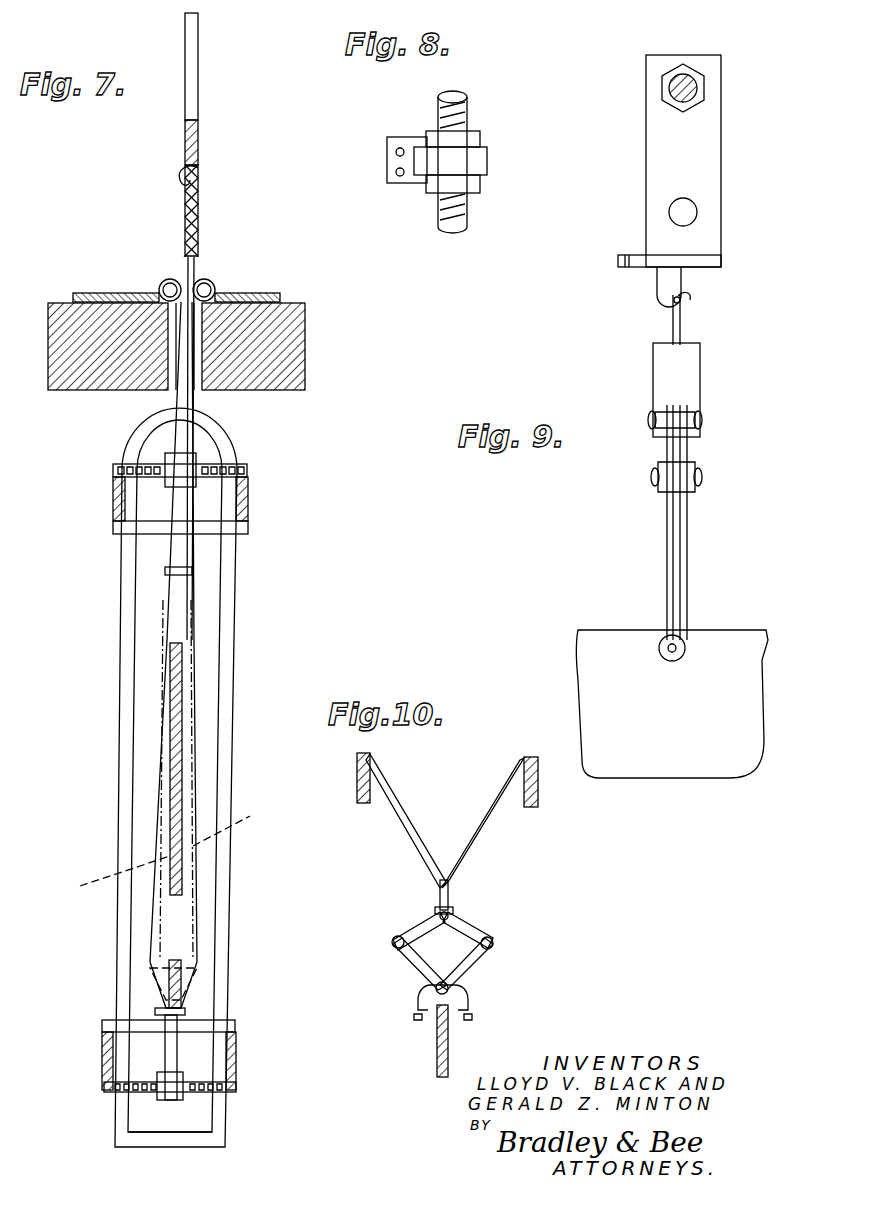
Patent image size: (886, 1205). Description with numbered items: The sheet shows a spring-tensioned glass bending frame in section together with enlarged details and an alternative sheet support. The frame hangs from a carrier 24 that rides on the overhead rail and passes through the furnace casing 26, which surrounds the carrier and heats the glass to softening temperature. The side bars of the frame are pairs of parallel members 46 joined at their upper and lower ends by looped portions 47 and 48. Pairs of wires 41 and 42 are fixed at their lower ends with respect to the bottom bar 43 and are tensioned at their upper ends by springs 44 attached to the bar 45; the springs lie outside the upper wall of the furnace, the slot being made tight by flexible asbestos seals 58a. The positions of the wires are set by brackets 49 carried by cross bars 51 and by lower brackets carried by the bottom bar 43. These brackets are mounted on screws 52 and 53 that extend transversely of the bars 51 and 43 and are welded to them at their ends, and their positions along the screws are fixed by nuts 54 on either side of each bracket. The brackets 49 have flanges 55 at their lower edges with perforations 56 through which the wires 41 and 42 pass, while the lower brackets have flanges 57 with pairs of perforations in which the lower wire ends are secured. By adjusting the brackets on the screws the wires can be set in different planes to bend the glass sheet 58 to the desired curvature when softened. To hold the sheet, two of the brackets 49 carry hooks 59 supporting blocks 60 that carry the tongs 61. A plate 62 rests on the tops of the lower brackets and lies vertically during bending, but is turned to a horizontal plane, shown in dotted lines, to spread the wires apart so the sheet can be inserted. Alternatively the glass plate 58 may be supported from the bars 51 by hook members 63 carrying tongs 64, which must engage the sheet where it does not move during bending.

In FIG. 7, the carrier 24 is at (202, 106).
In FIG. 7, the casing 26 is at (290, 342).
In FIG. 7, the wires 41 is at (185, 815).
In FIG. 7, the wires 42 is at (147, 856).
In FIG. 7, the bottom bar 43 is at (238, 1058).
In FIG. 7, the springs 44 is at (199, 210).
In FIG. 7, the bar 45 is at (199, 150).
In FIG. 7, the parallel members 46 is at (126, 737).
In FIG. 7, the looped portion 47 is at (222, 437).
In FIG. 7, the looped portion 48 is at (178, 1142).
In FIG. 7, the brackets 49 is at (186, 530).
In FIG. 8, the brackets 49 is at (450, 161).
In FIG. 9, the brackets 49 is at (700, 175).
In FIG. 7, the cross bars 51 is at (300, 531).
In FIG. 10, the cross bars 51 is at (362, 805).
In FIG. 7, the screws 52 is at (248, 471).
In FIG. 8, the screws 52 is at (468, 98).
In FIG. 9, the screws 52 is at (698, 95).
In FIG. 7, the screws 53 is at (238, 1090).
In FIG. 7, the nuts 54 is at (198, 465).
In FIG. 8, the nuts 54 is at (480, 137).
In FIG. 9, the nuts 54 is at (662, 104).
In FIG. 7, the flanges 55 is at (193, 572).
In FIG. 8, the flanges 55 is at (413, 184).
In FIG. 9, the flanges 55 is at (650, 262).
In FIG. 8, the perforations 56 is at (395, 172).
In FIG. 9, the perforations 56 is at (622, 250).
In FIG. 7, the flanges 57 is at (186, 1012).
In FIG. 7, the glass sheet 58 is at (178, 700).
In FIG. 9, the glass sheet 58 is at (605, 652).
In FIG. 10, the glass sheet 58 is at (436, 1054).
In FIG. 7, the flexible asbestos seals 58a is at (275, 268).
In FIG. 9, the hooks 59 is at (660, 306).
In FIG. 9, the blocks 60 is at (690, 380).
In FIG. 9, the tongs 61 is at (688, 548).
In FIG. 7, the plate 62 is at (182, 984).
In FIG. 10, the hook members 63 is at (490, 820).
In FIG. 10, the tongs 64 is at (458, 973).